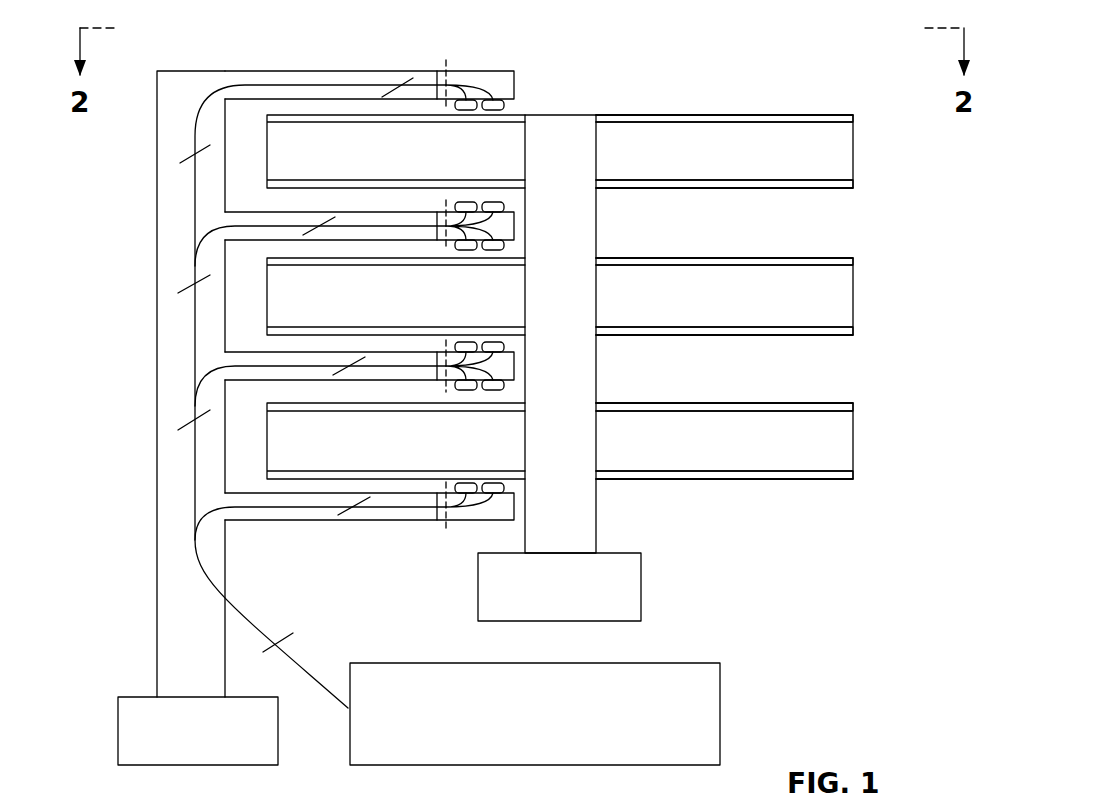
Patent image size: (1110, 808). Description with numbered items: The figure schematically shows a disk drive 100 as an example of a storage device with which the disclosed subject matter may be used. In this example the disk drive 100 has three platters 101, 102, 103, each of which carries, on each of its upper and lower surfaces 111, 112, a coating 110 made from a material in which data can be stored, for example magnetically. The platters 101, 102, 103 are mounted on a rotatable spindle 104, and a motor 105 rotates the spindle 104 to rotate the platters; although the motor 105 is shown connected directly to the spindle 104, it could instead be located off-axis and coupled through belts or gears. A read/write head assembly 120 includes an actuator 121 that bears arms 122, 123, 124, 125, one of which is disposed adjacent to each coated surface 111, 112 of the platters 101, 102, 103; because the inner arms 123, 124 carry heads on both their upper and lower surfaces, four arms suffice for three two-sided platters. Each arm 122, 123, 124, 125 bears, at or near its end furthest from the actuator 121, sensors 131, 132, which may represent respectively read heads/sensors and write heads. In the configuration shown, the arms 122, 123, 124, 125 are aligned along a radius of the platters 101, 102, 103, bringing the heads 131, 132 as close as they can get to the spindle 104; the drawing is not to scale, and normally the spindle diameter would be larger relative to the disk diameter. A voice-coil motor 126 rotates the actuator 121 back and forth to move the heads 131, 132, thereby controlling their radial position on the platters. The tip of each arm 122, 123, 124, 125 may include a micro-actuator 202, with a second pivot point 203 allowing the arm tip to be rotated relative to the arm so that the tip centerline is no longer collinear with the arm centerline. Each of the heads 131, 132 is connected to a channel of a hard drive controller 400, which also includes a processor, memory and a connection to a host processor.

The disk drive 100 is at (203, 35).
The platter 101 is at (853, 150).
The platter 102 is at (853, 295).
The platter 103 is at (853, 440).
The rotatable spindle 104 is at (570, 122).
The motor 105 is at (642, 588).
The coating 110 is at (853, 117).
The upper surface 111 is at (672, 113).
The lower surface 112 is at (672, 190).
The read/write head assembly 120 is at (150, 210).
The actuator 121 is at (157, 308).
The arm 122 is at (337, 71).
The arm 123 is at (353, 210).
The arm 124 is at (350, 351).
The arm 125 is at (352, 492).
The voice-coil motor 126 is at (153, 697).
The sensor 131 is at (493, 111).
The sensor 132 is at (466, 111).
The micro-actuator 202 is at (493, 75).
The second pivot point 203 is at (447, 75).
The hard drive controller 400 is at (420, 663).